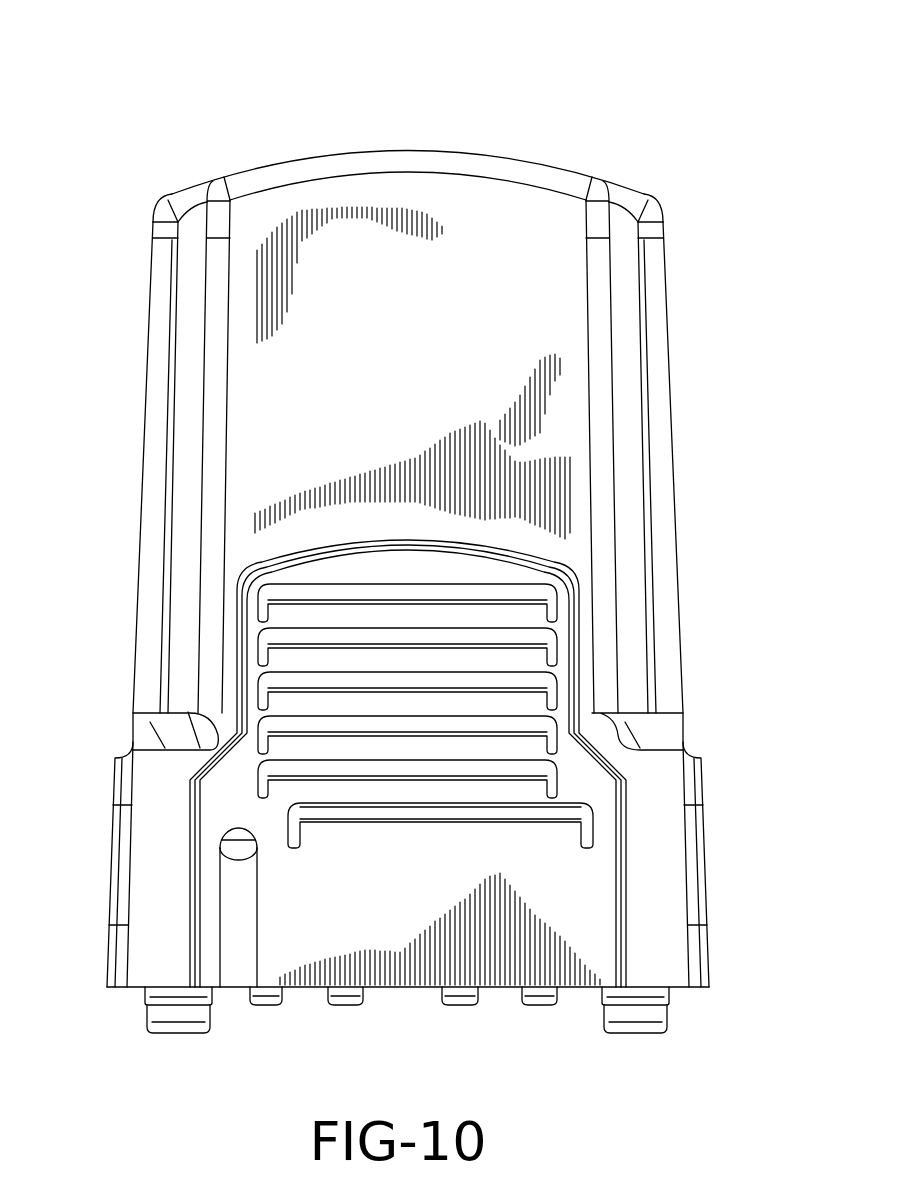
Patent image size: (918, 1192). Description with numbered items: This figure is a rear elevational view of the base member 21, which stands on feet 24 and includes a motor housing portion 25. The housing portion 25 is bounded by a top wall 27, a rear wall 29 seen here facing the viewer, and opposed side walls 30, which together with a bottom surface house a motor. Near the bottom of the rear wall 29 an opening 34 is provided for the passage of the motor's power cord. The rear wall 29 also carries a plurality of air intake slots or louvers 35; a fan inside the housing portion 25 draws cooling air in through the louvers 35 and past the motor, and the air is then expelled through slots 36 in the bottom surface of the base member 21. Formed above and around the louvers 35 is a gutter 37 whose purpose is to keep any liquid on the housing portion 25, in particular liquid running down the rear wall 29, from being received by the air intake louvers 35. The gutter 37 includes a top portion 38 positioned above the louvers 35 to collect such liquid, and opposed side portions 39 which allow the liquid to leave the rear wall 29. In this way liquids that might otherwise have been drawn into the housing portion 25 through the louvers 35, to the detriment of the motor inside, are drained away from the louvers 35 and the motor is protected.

The base member 21 is at (176, 104).
The feet 24 is at (160, 1027).
The motor housing portion 25 is at (558, 170).
The top wall 27 is at (405, 150).
The rear wall 29 is at (487, 325).
The side walls 30 is at (147, 393).
The opening 34 is at (237, 848).
The air intake louvers 35 is at (300, 637).
The slots 36 is at (262, 1005).
The gutter 37 is at (290, 549).
The top portion 38 is at (335, 545).
The side portions 39 is at (240, 668).